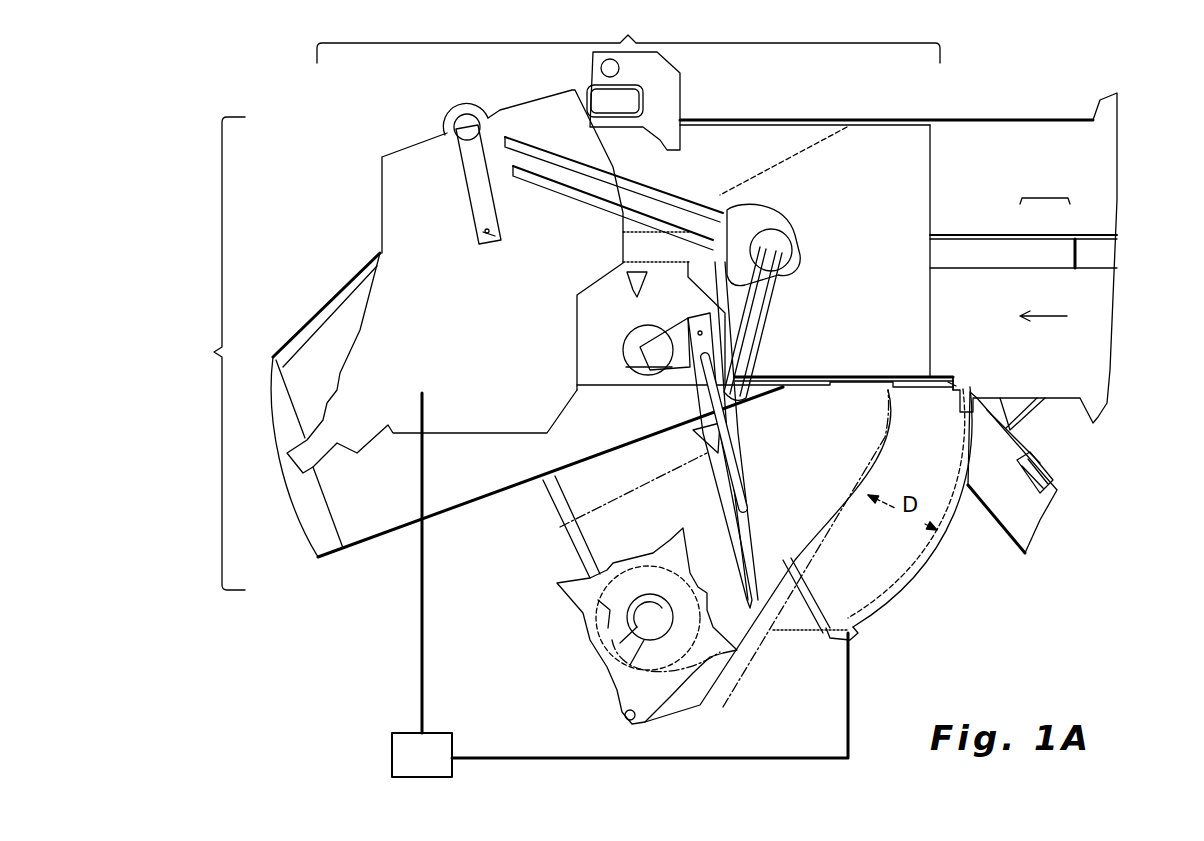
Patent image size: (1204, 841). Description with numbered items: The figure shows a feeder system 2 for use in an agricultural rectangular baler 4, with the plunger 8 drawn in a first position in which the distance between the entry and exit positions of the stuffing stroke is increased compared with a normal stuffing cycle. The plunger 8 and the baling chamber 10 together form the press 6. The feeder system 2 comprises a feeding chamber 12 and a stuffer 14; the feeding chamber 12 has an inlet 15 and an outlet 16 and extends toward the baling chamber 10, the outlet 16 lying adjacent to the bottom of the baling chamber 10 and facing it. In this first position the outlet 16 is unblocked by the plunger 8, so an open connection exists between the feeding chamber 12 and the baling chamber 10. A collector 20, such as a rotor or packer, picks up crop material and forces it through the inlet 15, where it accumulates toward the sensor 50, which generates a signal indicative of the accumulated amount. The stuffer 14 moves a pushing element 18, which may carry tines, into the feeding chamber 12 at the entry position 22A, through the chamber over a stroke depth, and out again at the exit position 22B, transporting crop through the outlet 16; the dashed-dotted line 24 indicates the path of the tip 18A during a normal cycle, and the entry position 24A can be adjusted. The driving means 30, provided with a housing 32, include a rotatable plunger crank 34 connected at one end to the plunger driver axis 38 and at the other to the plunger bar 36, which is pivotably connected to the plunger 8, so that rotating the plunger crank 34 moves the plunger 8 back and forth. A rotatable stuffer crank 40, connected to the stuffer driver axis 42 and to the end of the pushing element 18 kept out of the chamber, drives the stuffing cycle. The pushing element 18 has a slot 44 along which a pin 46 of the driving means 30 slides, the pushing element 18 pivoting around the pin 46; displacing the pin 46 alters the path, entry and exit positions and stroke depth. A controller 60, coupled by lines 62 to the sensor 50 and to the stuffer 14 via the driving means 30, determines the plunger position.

The feeder system 2 is at (550, 646).
The agricultural rectangular baler 4 is at (1018, 100).
The press 6 is at (628, 36).
The plunger 8 is at (851, 264).
The baling chamber 10 is at (985, 330).
The feeding chamber 12 is at (897, 552).
The stuffer 14 is at (212, 353).
The inlet 15 is at (762, 650).
The outlet 16 is at (953, 381).
The pushing element 18 is at (757, 560).
The tip 18A is at (747, 612).
The collector 20 is at (610, 660).
The entry position 22A is at (770, 640).
The exit position 22B is at (885, 440).
The normal path 24 is at (950, 530).
The entry position 24A is at (870, 605).
The driving means 30 is at (456, 315).
The housing 32 is at (545, 227).
The plunger crank 34 is at (470, 165).
The plunger bar 36 is at (533, 155).
The plunger driver axis 38 is at (483, 231).
The stuffer crank 40 is at (640, 460).
The stuffer driver axis 42 is at (655, 326).
The slot 44 is at (740, 480).
The pin 46 is at (712, 470).
The sensor 50 is at (853, 628).
The controller 60 is at (410, 765).
The lines 62 is at (420, 683).